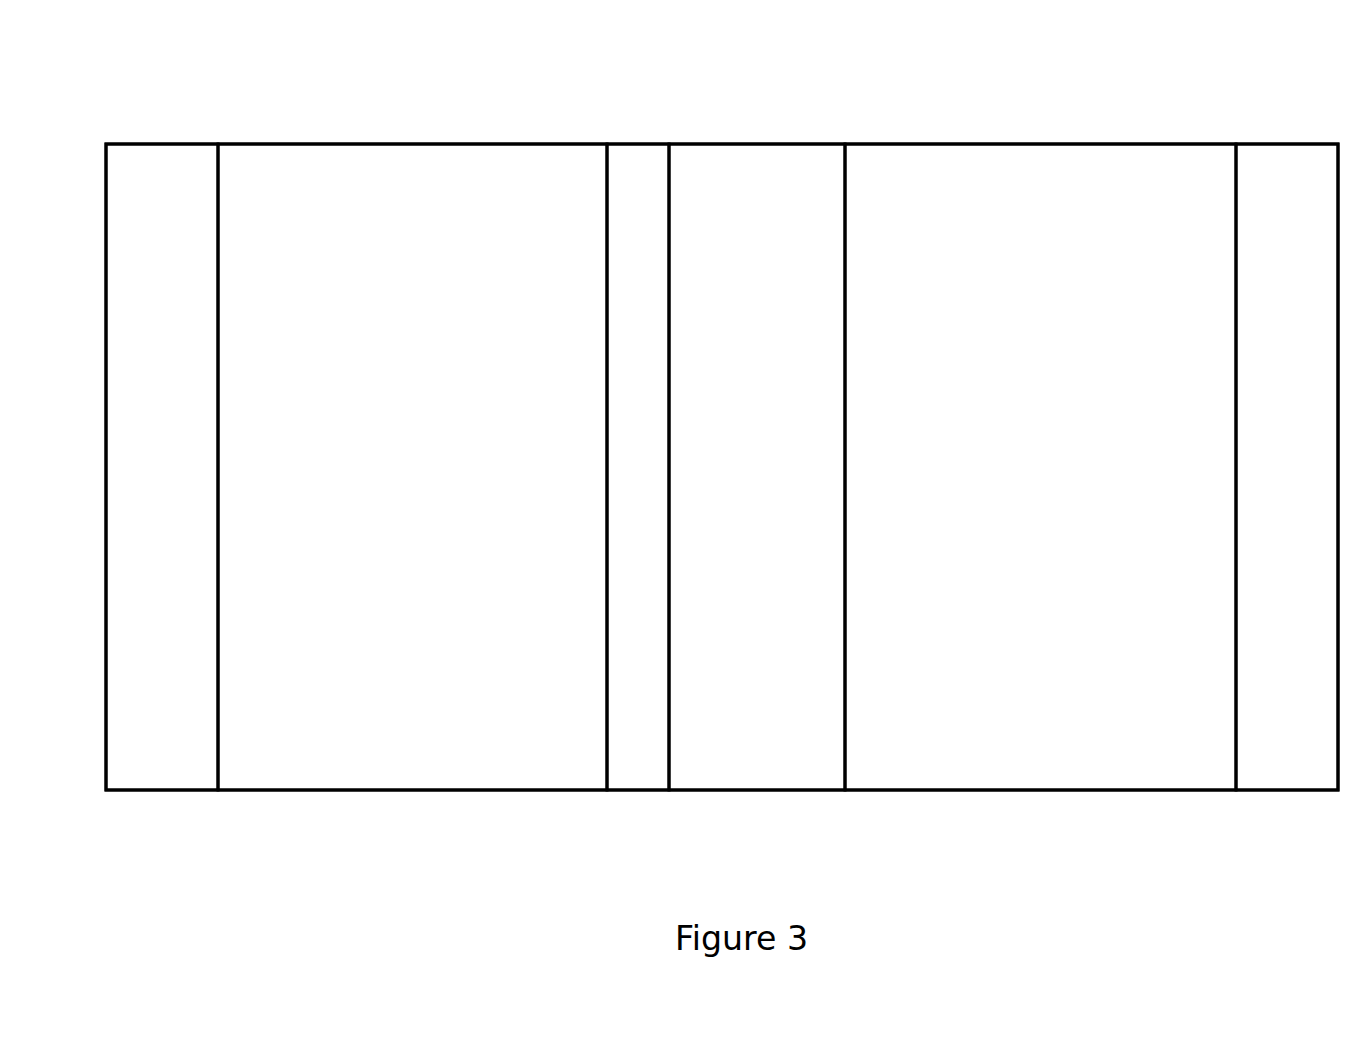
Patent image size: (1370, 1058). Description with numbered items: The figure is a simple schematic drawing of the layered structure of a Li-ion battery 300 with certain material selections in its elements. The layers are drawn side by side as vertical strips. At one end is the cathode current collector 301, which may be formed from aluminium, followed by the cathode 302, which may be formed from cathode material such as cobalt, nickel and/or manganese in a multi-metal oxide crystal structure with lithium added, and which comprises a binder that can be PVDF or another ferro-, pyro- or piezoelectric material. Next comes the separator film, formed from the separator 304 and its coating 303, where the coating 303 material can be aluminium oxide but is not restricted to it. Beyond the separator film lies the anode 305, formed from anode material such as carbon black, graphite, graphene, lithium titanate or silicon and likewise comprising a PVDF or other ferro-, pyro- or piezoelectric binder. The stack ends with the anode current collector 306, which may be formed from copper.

The Li-ion battery 300 is at (1093, 107).
The cathode current collector 301 is at (168, 782).
The cathode 302 is at (423, 782).
The coating 303 is at (638, 783).
The separator 304 is at (758, 783).
The anode 305 is at (1056, 782).
The anode current collector 306 is at (1286, 782).